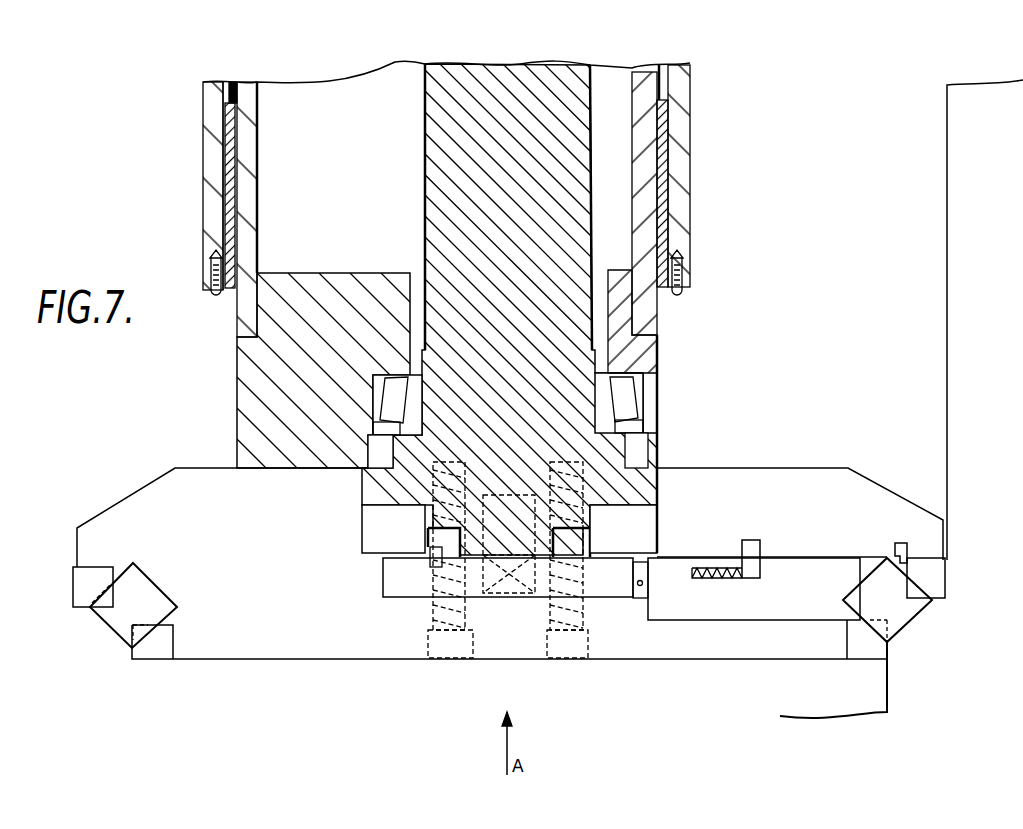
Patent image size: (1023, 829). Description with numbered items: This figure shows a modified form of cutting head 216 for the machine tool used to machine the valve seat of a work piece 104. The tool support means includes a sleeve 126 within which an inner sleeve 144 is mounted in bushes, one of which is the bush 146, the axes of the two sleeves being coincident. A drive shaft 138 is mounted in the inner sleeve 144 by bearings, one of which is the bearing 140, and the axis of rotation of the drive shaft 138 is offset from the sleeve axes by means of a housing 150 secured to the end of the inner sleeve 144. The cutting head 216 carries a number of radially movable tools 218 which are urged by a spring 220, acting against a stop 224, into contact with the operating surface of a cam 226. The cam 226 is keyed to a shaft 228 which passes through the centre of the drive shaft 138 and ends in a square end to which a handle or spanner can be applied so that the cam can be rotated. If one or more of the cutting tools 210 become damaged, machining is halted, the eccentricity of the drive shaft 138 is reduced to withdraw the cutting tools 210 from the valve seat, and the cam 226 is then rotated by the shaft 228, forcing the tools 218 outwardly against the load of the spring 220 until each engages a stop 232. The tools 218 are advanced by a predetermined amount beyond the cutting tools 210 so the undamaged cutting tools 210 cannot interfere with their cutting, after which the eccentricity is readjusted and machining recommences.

The work piece 104 is at (947, 305).
The sleeve 126 is at (680, 115).
The drive shaft 138 is at (568, 88).
The bearing 140 is at (627, 402).
The inner sleeve 144 is at (252, 98).
The bush 146 is at (667, 193).
The housing 150 is at (647, 357).
The cutting tools 210 is at (123, 613).
The cutting head 216 is at (782, 485).
The radially movable tools 218 is at (897, 608).
The spring 220 is at (718, 580).
The stop 224 is at (755, 567).
The cam 226 is at (607, 583).
The shaft 228 is at (503, 597).
The stop 232 is at (905, 548).